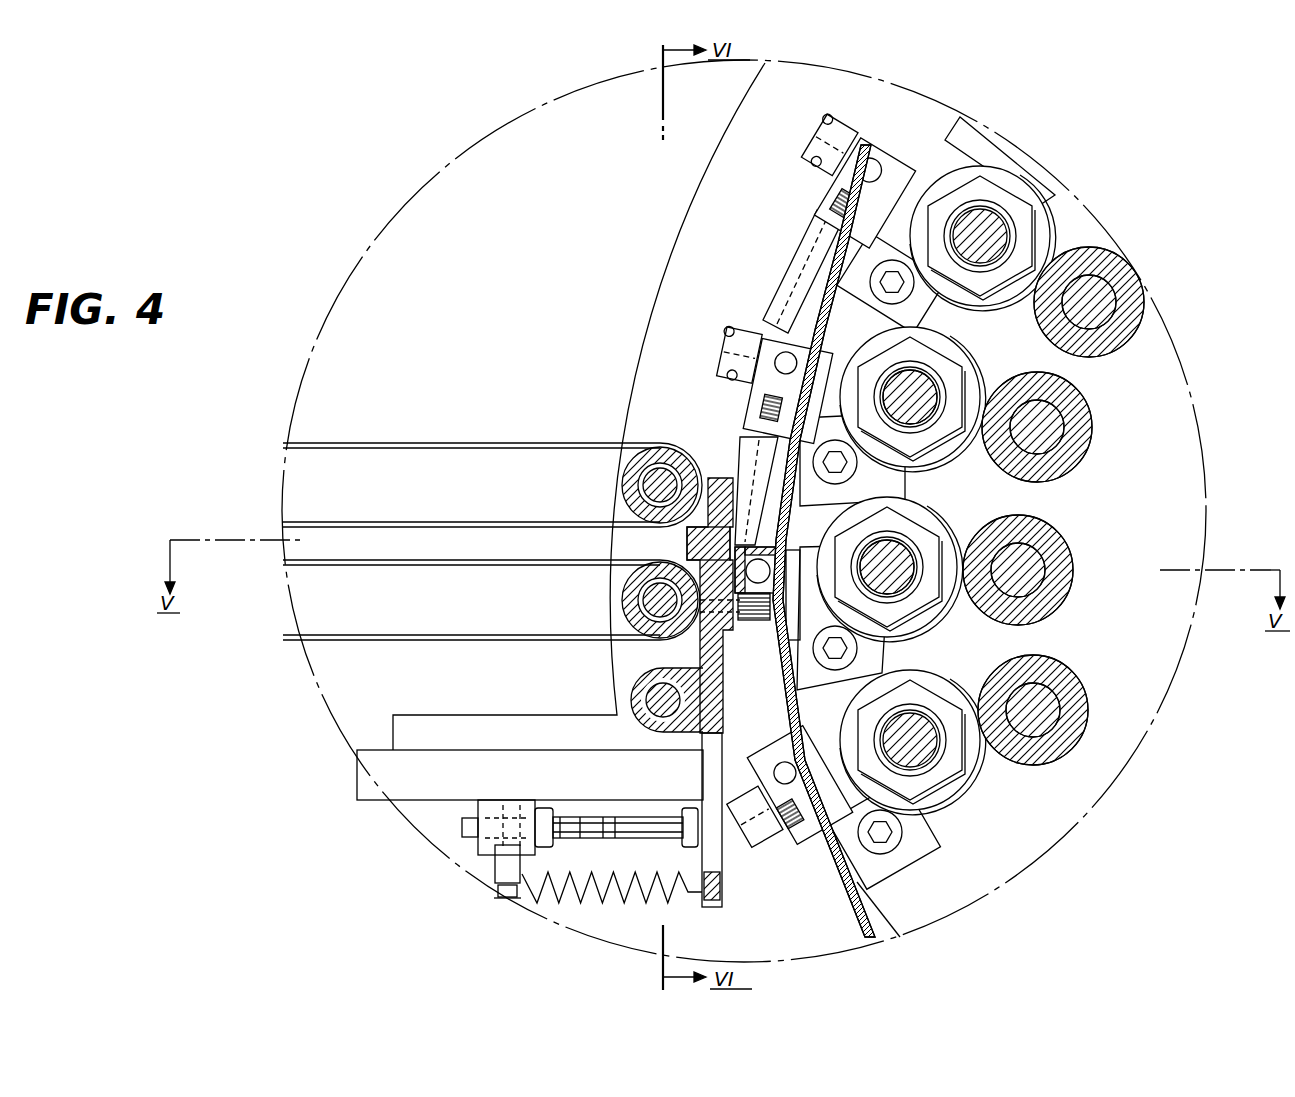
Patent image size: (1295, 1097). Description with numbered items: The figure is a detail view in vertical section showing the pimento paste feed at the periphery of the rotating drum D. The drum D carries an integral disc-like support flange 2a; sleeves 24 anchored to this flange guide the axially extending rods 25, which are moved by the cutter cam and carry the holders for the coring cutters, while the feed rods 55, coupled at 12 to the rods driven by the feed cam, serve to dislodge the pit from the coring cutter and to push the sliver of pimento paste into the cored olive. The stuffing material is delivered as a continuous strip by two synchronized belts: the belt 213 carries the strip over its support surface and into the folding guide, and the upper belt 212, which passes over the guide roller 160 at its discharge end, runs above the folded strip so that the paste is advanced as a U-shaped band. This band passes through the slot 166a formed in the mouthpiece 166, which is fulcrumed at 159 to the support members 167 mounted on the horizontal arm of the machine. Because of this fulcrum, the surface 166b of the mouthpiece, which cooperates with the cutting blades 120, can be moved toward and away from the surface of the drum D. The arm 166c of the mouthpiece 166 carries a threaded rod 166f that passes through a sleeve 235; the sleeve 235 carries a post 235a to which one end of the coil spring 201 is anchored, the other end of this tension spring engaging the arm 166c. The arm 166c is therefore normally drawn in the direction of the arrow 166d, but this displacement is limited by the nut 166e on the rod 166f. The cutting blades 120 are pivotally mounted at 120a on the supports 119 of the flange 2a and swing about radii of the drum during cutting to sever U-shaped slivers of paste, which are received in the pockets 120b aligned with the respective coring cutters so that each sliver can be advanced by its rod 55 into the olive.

The support flange 2a is at (1068, 828).
The coupling 12 is at (958, 285).
The sleeves 24 is at (1080, 355).
The rods 25 is at (1030, 557).
The feeding rod 55 is at (915, 415).
The supports 119 is at (922, 837).
The cutting blades 120 is at (792, 282).
The pivot 120a is at (838, 205).
The pockets 120b is at (858, 150).
The fulcrum 159 is at (645, 690).
The guide roller 160 is at (650, 482).
The mouthpiece 166 is at (722, 900).
The slot 166a is at (700, 547).
The surface 166b is at (750, 458).
The arm 166c is at (718, 873).
The arrow 166d is at (640, 779).
The nut 166e is at (543, 806).
The threaded rod 166f is at (668, 832).
The support members 167 is at (655, 368).
The coil spring 201 is at (583, 902).
The upper belt 212 is at (400, 414).
The belt 213 is at (418, 605).
The sleeve 235 is at (488, 806).
The post 235a is at (492, 862).
The drum D is at (846, 915).